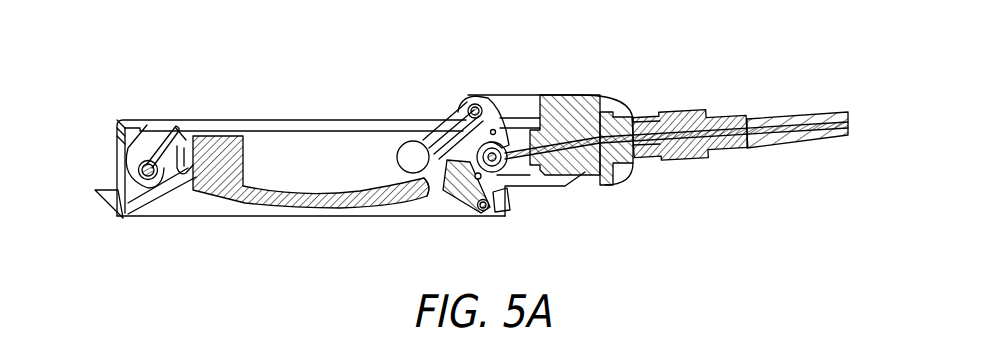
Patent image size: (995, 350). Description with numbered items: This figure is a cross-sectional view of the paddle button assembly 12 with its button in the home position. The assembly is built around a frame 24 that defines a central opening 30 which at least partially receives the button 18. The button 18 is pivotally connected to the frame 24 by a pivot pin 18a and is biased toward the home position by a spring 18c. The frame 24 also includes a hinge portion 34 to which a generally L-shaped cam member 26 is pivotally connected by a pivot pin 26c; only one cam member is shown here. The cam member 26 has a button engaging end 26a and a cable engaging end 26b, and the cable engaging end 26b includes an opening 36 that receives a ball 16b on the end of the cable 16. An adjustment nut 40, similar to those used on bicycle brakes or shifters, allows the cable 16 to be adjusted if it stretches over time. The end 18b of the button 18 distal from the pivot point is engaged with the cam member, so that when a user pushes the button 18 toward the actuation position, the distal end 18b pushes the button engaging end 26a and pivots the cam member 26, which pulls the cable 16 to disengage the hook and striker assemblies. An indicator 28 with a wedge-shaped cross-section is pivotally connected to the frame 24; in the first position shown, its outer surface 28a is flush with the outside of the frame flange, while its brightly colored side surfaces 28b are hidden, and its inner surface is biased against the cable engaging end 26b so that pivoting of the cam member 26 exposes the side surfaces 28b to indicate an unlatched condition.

The paddle button assembly 12 is at (104, 84).
The cable 16 is at (766, 130).
The ball 16b is at (508, 150).
The button 18 is at (262, 206).
The pivot pin 18a is at (149, 162).
The end of the button 18b is at (427, 192).
The spring 18c is at (132, 176).
The frame 24 is at (112, 200).
The cam member 26 is at (487, 95).
The button engaging end 26a is at (398, 140).
The cable engaging end 26b is at (515, 183).
The pivot pin 26c is at (469, 108).
The indicator 28 is at (467, 196).
The outer surface 28a is at (447, 205).
The side surfaces 28b is at (508, 192).
The central opening 30 is at (268, 160).
The hinge portion 34 is at (502, 103).
The opening 36 is at (535, 183).
The adjustment nut 40 is at (595, 115).